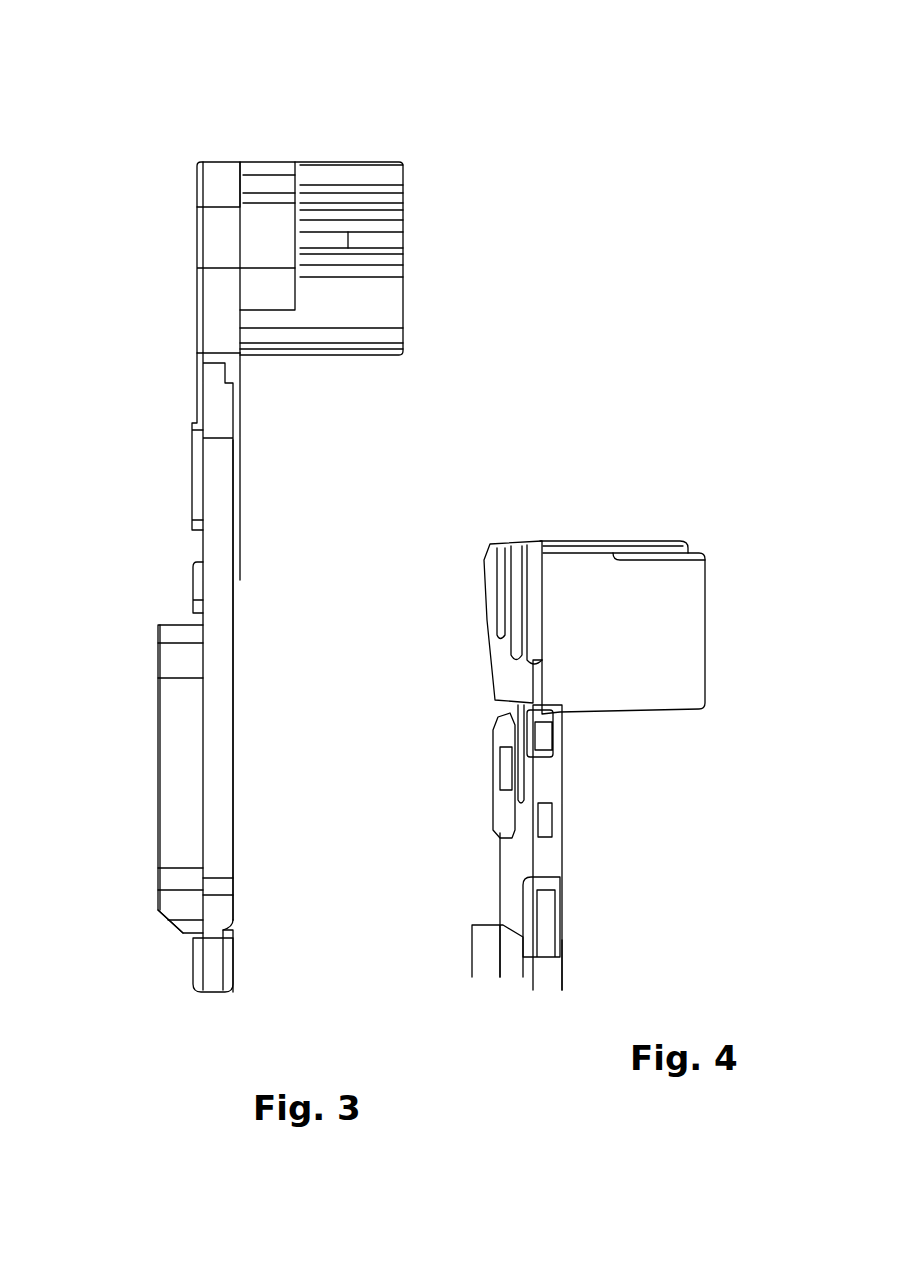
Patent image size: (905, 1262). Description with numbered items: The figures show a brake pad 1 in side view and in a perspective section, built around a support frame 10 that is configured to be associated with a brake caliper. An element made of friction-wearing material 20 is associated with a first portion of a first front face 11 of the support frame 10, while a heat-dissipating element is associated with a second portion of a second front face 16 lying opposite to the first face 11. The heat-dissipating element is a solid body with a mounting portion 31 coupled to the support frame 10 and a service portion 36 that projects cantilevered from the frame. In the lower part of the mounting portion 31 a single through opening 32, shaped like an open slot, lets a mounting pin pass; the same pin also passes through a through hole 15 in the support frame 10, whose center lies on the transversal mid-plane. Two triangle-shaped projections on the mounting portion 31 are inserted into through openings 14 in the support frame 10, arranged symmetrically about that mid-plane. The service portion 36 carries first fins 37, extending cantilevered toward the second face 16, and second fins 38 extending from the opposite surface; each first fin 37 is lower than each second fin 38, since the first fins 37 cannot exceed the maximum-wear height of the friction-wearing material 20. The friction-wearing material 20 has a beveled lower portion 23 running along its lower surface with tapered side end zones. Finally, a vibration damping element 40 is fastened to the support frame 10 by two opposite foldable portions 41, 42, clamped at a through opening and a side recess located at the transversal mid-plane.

In FIG. 3, the pad 1 is at (238, 84).
In FIG. 4, the pad 1 is at (725, 470).
In FIG. 3, the support frame 10 is at (206, 549).
In FIG. 4, the support frame 10 is at (510, 889).
In FIG. 3, the first front face 11 is at (206, 767).
In FIG. 4, the through openings 14 is at (500, 800).
In FIG. 4, the through hole 15 is at (540, 783).
In FIG. 3, the second front face 16 is at (233, 677).
In FIG. 3, the element made of friction-wearing material 20 is at (172, 812).
In FIG. 4, the element made of friction-wearing material 20 is at (471, 970).
In FIG. 3, the beveled lower portion 23 is at (173, 930).
In FIG. 3, the mounting portion 31 is at (247, 464).
In FIG. 4, the mounting portion 31 is at (574, 741).
In FIG. 4, the through opening 32 is at (557, 770).
In FIG. 3, the service portion 36 is at (414, 243).
In FIG. 4, the service portion 36 is at (712, 607).
In FIG. 3, the first fins 37 is at (200, 180).
In FIG. 4, the first fins 37 is at (487, 574).
In FIG. 3, the second fins 38 is at (377, 302).
In FIG. 4, the second fins 38 is at (672, 634).
In FIG. 3, the vibration damping element 40 is at (238, 937).
In FIG. 4, the vibration damping element 40 is at (564, 937).
In FIG. 3, the fastening portion 41 is at (190, 590).
In FIG. 3, the fastening portion 42 is at (205, 966).